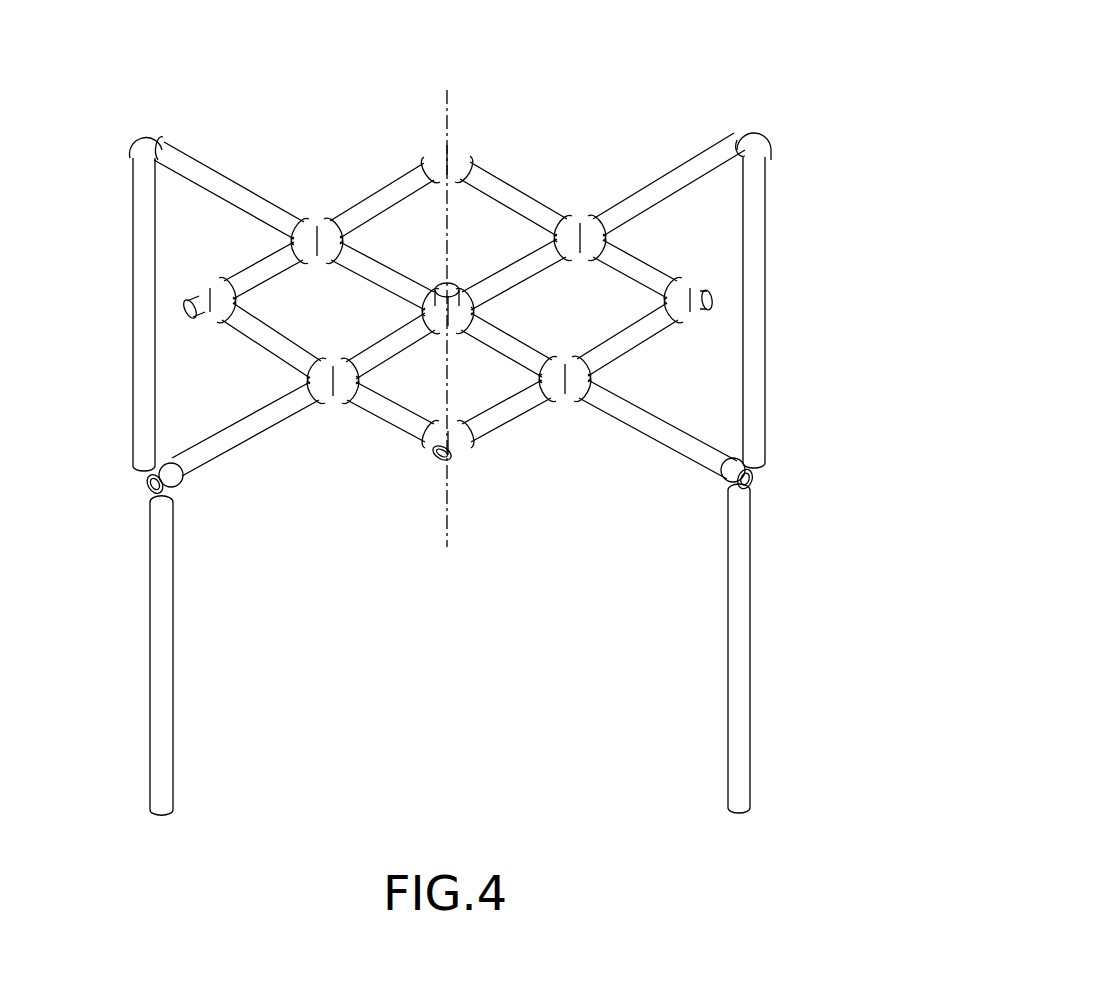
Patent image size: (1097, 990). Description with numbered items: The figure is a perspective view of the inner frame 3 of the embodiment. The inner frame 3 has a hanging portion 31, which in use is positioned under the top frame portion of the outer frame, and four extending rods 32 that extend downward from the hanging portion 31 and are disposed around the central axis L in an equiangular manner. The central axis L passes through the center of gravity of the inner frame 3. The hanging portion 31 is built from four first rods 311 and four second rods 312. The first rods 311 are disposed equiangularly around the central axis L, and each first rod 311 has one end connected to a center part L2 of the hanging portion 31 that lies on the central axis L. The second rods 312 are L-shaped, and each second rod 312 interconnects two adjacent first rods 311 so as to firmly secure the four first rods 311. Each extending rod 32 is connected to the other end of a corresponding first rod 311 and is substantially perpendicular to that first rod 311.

The inner frame 3 is at (735, 84).
The hanging portion 31 is at (652, 458).
The first rod 311 is at (227, 187).
The second rod 312 is at (504, 190).
The extending rod 32 is at (138, 285).
The central axis L is at (453, 335).
The center part L2 is at (467, 322).